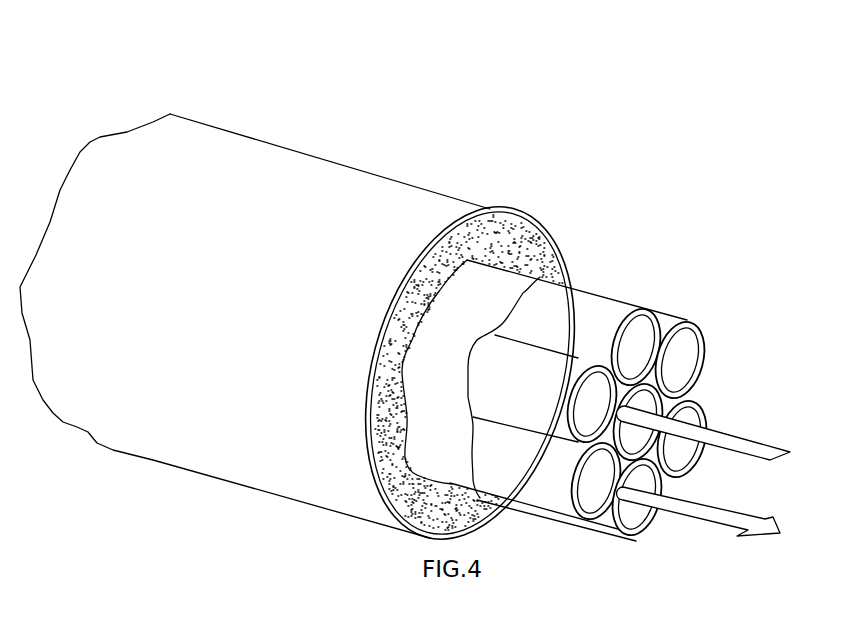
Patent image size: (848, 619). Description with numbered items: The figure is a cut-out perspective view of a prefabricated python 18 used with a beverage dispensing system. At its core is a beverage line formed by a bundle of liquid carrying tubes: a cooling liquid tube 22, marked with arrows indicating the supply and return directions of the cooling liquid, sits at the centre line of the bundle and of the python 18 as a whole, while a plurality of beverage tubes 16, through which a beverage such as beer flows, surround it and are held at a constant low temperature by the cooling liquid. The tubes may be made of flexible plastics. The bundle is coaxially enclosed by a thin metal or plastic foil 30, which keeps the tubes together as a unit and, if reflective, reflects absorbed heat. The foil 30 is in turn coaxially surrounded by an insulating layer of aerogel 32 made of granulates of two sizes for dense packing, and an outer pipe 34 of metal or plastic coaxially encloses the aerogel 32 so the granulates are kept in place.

The python 18 is at (212, 112).
The pipe 34 is at (508, 216).
The insulating layer of aerogel 32 is at (512, 240).
The foil 30 is at (514, 282).
The beverage tubes 16 is at (594, 406).
The cooling liquid tube 22 is at (632, 437).